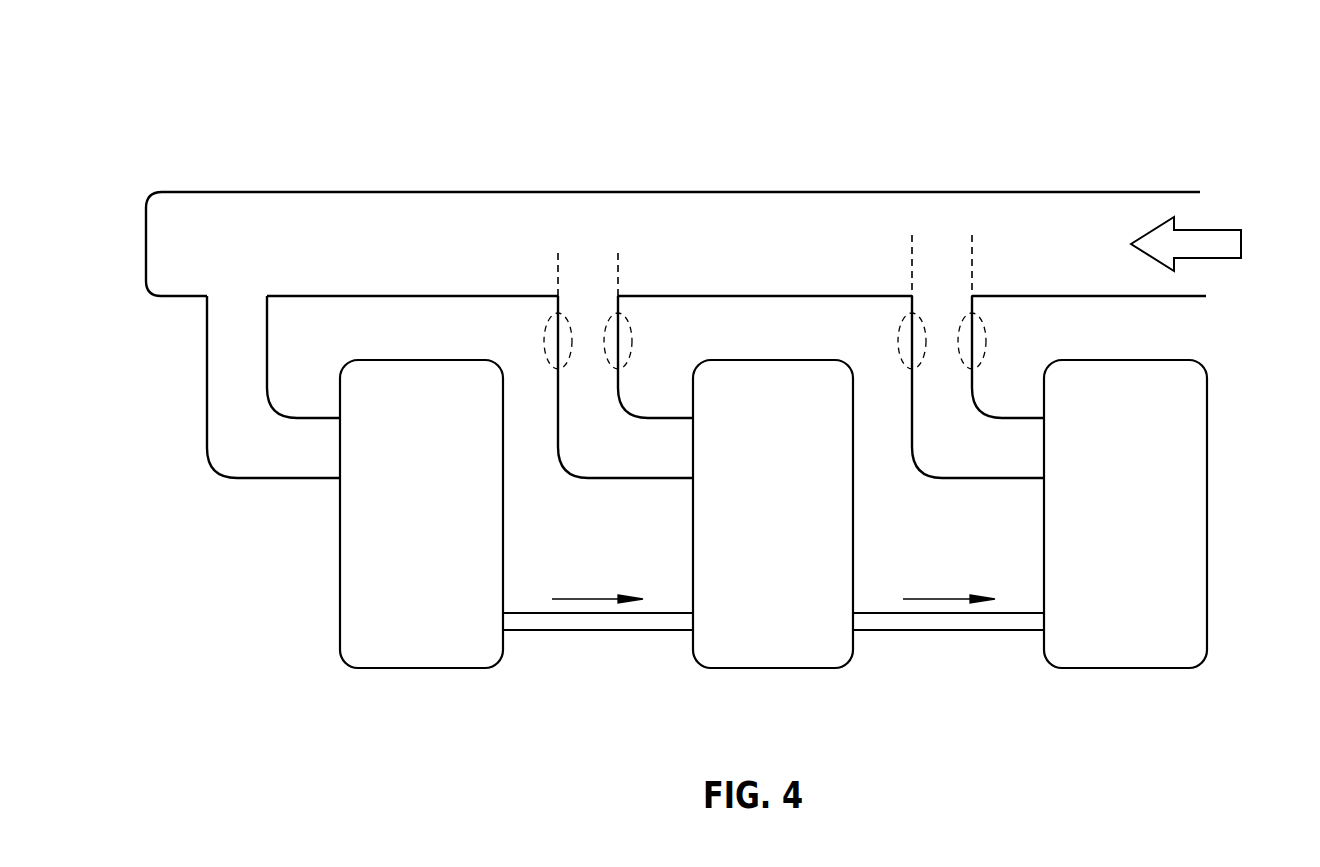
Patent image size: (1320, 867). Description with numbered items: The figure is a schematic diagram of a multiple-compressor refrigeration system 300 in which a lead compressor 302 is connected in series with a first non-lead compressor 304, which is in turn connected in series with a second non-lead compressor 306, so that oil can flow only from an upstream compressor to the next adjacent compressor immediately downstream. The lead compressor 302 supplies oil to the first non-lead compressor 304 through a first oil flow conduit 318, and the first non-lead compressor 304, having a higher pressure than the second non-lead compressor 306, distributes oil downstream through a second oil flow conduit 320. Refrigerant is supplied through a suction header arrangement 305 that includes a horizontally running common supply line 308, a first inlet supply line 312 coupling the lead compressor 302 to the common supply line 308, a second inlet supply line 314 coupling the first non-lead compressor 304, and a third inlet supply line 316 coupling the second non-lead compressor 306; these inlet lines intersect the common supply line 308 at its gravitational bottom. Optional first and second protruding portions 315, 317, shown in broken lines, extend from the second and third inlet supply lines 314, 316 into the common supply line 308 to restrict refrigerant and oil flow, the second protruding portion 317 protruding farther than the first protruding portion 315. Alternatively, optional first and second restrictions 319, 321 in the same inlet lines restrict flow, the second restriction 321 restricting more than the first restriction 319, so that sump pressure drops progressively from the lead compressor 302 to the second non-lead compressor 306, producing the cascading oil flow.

The multiple-compressor refrigeration system 300 is at (1170, 106).
The lead compressor 302 is at (378, 670).
The first non-lead compressor 304 is at (731, 670).
The suction header arrangement 305 is at (676, 188).
The second non-lead compressor 306 is at (1081, 670).
The common supply line 308 is at (327, 190).
The first inlet supply line 312 is at (207, 315).
The second inlet supply line 314 is at (558, 331).
The first protruding portion 315 is at (558, 259).
The third inlet supply line 316 is at (912, 331).
The second protruding portion 317 is at (912, 238).
The first oil flow conduit 318 is at (542, 632).
The first restriction 319 is at (632, 341).
The second oil flow conduit 320 is at (893, 632).
The second restriction 321 is at (986, 339).